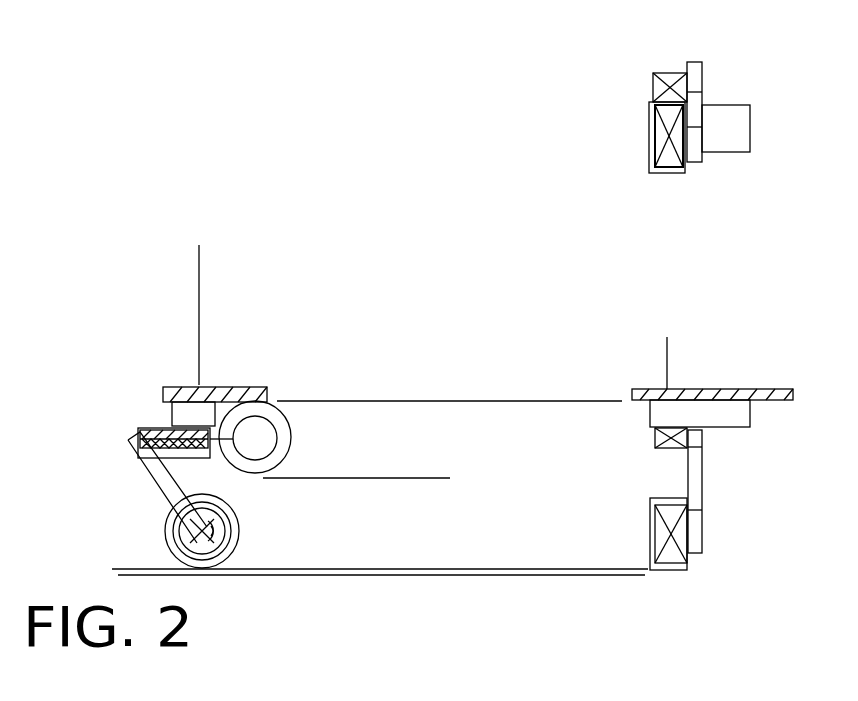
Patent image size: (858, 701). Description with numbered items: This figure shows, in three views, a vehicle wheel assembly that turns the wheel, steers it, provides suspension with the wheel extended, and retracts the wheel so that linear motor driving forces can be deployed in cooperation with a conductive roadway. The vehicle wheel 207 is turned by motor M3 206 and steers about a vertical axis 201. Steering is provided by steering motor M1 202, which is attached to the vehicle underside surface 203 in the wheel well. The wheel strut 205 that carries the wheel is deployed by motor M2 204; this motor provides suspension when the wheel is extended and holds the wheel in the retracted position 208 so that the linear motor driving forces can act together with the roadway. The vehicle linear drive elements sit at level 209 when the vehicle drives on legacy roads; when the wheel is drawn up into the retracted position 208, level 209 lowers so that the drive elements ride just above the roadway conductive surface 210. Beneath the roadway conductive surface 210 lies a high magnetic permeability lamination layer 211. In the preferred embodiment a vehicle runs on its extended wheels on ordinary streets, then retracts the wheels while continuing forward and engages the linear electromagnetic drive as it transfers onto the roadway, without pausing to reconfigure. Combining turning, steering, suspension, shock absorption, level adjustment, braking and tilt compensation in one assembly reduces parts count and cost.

The vertical axis 201 is at (668, 137).
The steering motor M1 202 is at (750, 140).
The vehicle underside surface 203 is at (220, 387).
The motor M2 204 is at (657, 73).
The wheel strut 205 is at (700, 63).
The motor M3 206 is at (668, 163).
The vehicle wheel 207 is at (667, 175).
The retracted position 208 is at (288, 460).
The level of vehicle linear drive elements 209 is at (393, 480).
The roadway conductive surface 210 is at (422, 569).
The high magnetic permeability lamination layer 211 is at (480, 576).